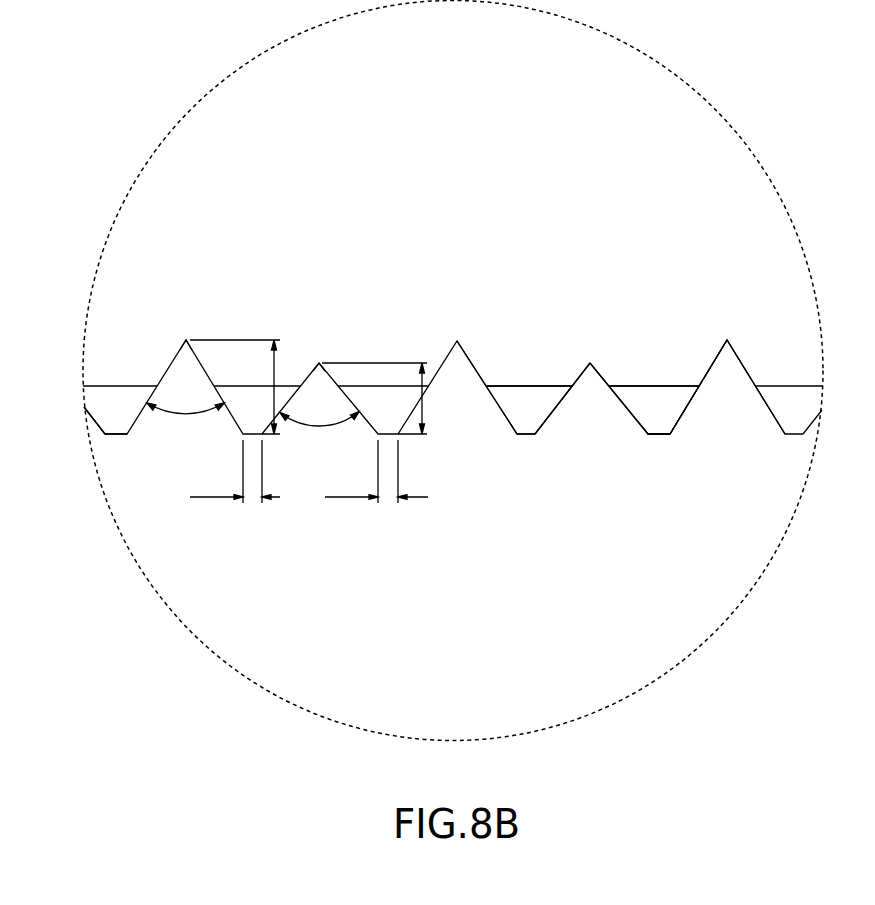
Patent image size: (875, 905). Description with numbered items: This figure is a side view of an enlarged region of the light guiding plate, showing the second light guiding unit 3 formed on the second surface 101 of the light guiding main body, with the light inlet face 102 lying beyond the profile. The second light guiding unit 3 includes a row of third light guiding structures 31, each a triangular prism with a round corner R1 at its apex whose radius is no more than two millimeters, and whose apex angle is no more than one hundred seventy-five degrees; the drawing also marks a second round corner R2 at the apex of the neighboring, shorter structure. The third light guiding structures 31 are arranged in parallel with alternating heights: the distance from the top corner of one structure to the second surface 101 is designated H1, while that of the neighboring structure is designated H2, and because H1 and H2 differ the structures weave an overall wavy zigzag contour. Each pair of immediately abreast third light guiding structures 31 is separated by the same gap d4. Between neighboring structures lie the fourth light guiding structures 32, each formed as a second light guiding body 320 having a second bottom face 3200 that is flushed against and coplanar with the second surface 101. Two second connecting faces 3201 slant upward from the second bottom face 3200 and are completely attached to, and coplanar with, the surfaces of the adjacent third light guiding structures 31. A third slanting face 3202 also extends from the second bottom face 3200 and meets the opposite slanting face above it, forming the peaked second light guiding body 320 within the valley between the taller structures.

The second light guiding unit 3 is at (755, 274).
The third light guiding structure 31 is at (738, 360).
The fourth light guiding structure 32 is at (703, 309).
The second light guiding body 320 is at (663, 390).
The second bottom face 3200 is at (525, 435).
The second connecting face 3201 is at (495, 403).
The third slanting face 3202 is at (523, 400).
The second surface 101 is at (113, 434).
The light inlet face 102 is at (476, 592).
The round corner R1 is at (186, 339).
The second peak radius R2 is at (319, 362).
The distance from top corner to second surface H1 is at (235, 387).
The distance from top corner to second surface H2 is at (374, 381).
The gap d4 is at (309, 471).